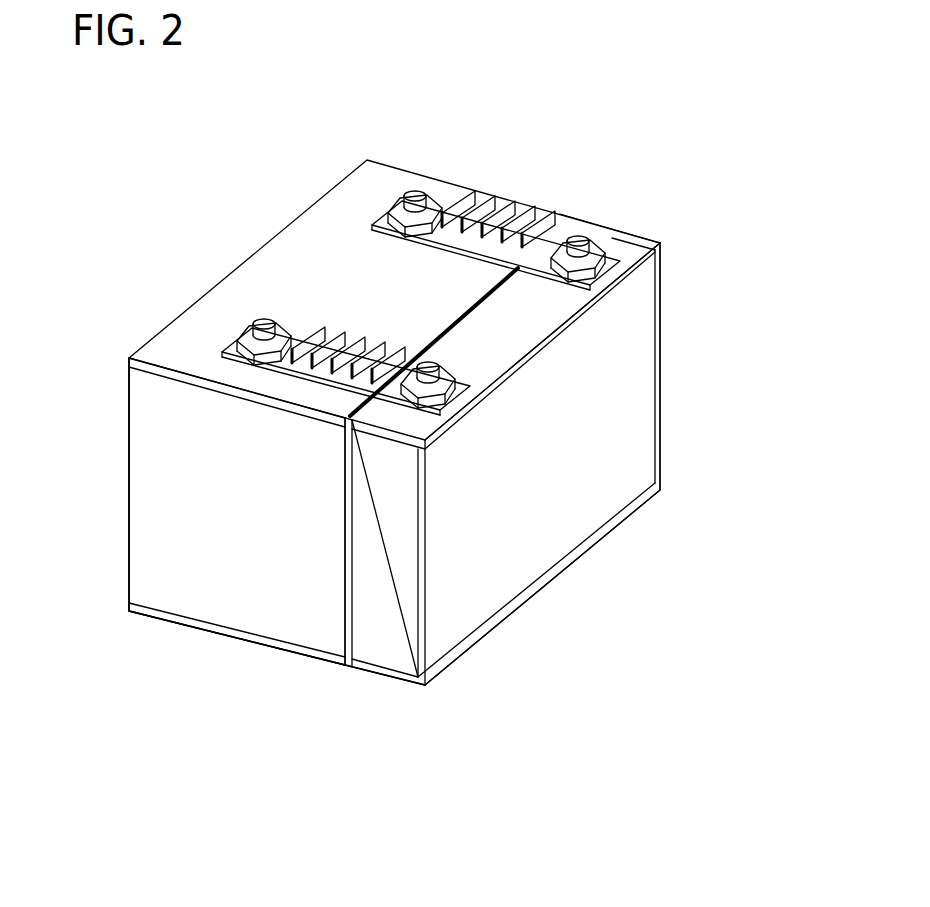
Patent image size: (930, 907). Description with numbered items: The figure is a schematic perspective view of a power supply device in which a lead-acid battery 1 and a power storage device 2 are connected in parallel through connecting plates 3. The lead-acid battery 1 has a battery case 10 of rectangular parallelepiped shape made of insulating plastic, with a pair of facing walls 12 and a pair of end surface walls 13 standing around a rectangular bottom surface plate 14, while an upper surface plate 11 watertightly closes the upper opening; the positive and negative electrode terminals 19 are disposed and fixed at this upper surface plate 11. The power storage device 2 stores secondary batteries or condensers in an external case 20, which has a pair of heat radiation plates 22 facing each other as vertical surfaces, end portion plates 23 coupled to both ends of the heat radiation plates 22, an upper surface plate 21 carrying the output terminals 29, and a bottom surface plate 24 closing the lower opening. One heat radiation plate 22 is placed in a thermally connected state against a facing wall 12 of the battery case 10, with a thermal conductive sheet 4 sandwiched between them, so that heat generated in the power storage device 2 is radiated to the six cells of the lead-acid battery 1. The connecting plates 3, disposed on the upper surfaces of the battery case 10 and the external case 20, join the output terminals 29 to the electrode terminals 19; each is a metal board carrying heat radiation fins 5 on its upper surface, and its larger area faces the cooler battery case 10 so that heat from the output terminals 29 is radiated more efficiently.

The lead-acid battery 1 is at (230, 195).
The power storage device 2 is at (630, 217).
The connecting plate 3 is at (302, 337).
The thermal conductive sheet 4 is at (345, 560).
The heat radiation fin 5 is at (468, 200).
The battery case 10 is at (172, 482).
The upper surface plate 11 is at (187, 343).
The facing wall 12 is at (128, 422).
The end surface wall 13 is at (182, 490).
The bottom surface plate 14 is at (183, 625).
The electrode terminal 19 is at (262, 322).
The external case 20 is at (502, 506).
The upper surface plate 21 is at (523, 307).
The heat radiation plate 22 is at (520, 522).
The end portion plate 23 is at (393, 618).
The bottom surface plate 24 is at (376, 684).
The output terminal 29 is at (432, 360).